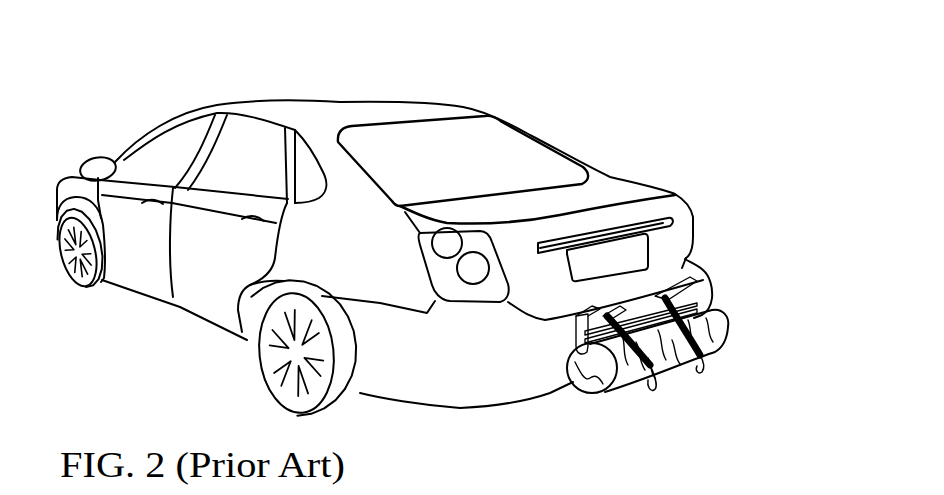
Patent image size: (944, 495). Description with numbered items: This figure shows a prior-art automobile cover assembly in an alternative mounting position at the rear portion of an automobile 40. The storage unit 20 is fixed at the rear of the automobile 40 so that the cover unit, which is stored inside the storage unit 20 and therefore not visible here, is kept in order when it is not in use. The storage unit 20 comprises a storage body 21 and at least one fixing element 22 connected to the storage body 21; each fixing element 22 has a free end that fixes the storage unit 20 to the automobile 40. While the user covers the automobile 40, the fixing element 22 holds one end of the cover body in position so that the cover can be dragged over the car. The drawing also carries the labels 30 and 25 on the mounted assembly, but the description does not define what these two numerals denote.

The automobile 40 is at (306, 113).
The hitch-mounted cargo carrier 30 is at (700, 334).
The fixing element 22 is at (684, 290).
The storage body 21 is at (717, 332).
The securing straps 25 is at (701, 363).
The storage unit 20 is at (719, 334).